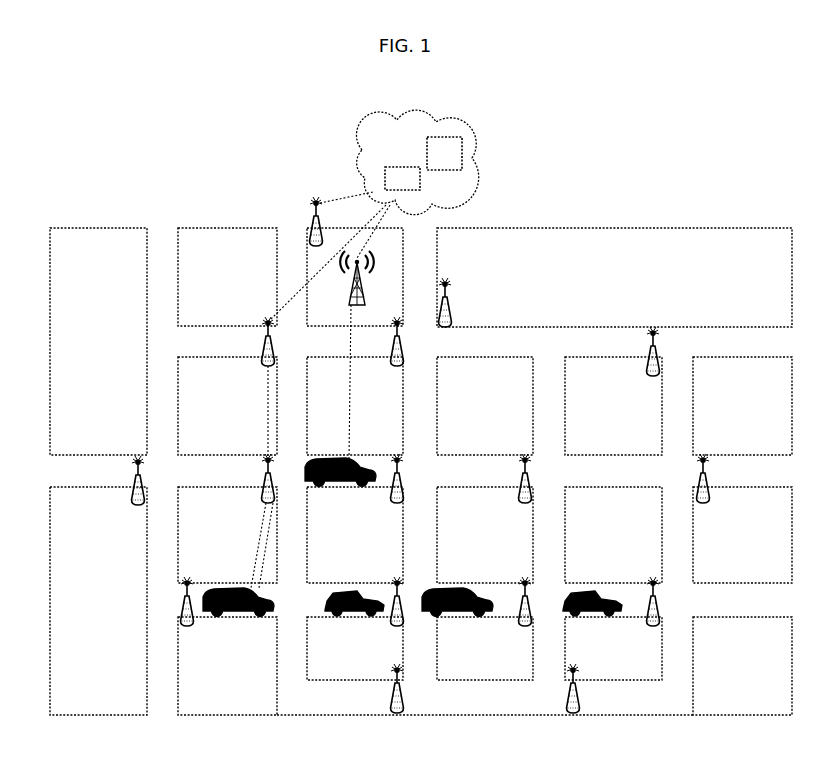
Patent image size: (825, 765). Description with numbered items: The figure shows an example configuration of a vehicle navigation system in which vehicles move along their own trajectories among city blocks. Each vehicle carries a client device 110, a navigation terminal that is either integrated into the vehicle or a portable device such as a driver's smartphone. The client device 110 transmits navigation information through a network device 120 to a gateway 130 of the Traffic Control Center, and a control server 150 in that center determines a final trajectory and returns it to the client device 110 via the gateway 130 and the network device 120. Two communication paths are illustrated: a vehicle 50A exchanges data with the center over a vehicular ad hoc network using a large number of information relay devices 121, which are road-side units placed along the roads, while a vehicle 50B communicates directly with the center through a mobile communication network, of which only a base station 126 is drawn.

The network device 120 is at (415, 110).
The control server 150 is at (461, 136).
The gateway 130 is at (437, 206).
The information relay device 121 is at (318, 197).
The base station 126 is at (348, 306).
The client device 110 is at (360, 457).
The vehicle 50A is at (243, 585).
The vehicle 50B is at (338, 457).